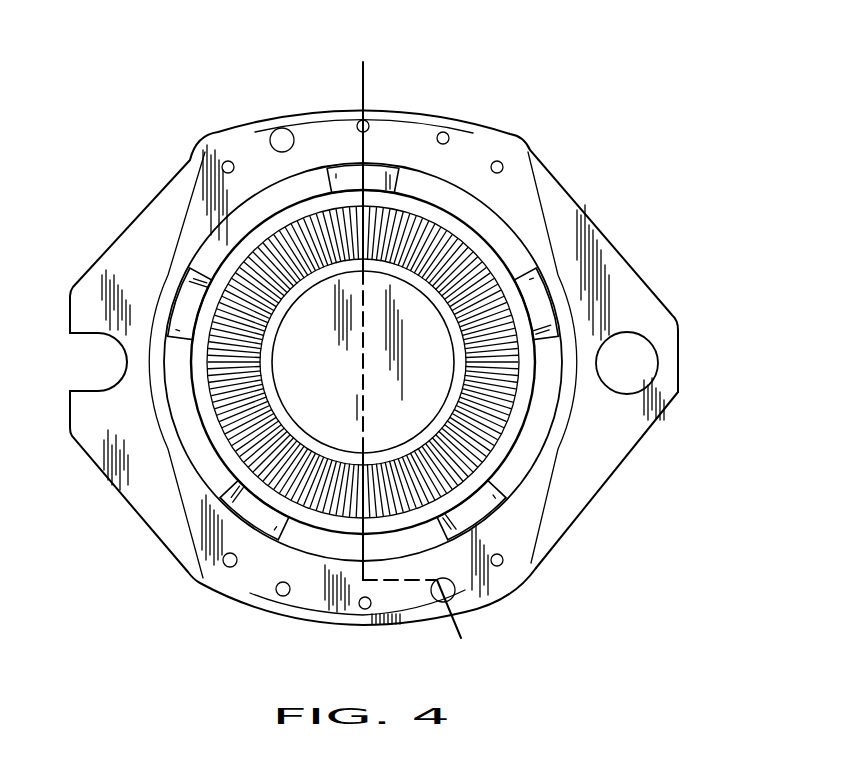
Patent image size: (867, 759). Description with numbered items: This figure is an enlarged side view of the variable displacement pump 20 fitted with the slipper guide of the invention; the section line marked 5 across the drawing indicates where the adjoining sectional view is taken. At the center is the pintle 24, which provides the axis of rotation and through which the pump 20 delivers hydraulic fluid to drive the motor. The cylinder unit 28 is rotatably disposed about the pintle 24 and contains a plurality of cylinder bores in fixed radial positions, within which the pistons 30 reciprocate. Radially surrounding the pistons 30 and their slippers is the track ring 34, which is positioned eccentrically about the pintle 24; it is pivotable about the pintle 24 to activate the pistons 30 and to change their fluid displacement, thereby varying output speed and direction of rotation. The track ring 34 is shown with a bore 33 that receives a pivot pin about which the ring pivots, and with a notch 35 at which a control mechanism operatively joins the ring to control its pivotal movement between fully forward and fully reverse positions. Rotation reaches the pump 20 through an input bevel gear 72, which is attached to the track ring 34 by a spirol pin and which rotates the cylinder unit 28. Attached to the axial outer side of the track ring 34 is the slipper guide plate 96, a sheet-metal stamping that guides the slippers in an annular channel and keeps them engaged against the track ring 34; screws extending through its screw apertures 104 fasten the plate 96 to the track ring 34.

The pump 20 is at (672, 266).
The pintle 24 is at (337, 372).
The cylinder unit 28 is at (218, 440).
The pistons 30 is at (390, 165).
The bore 33 is at (641, 349).
The track ring 34 is at (592, 468).
The notch 35 is at (90, 347).
The input bevel gear 72 is at (518, 398).
The slipper guide plate 96 is at (197, 208).
The screw apertures 104 is at (226, 161).
The section line 5- 5 is at (363, 72).